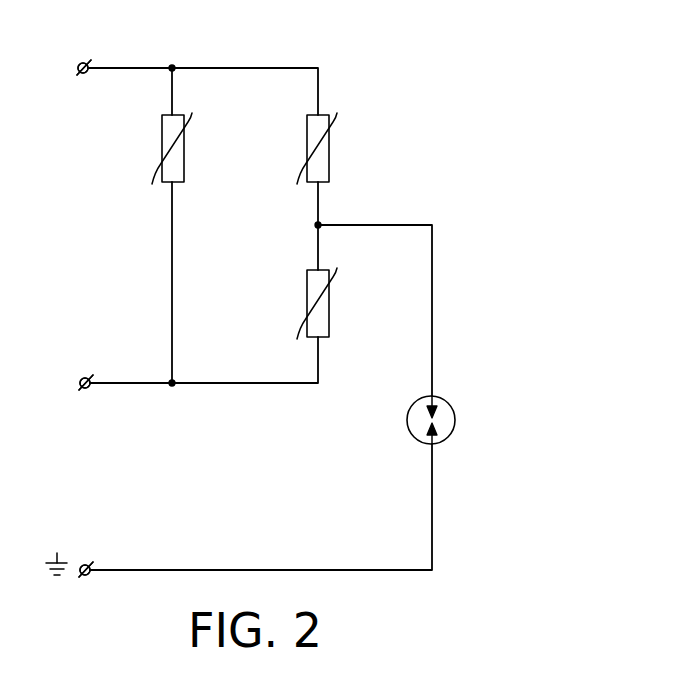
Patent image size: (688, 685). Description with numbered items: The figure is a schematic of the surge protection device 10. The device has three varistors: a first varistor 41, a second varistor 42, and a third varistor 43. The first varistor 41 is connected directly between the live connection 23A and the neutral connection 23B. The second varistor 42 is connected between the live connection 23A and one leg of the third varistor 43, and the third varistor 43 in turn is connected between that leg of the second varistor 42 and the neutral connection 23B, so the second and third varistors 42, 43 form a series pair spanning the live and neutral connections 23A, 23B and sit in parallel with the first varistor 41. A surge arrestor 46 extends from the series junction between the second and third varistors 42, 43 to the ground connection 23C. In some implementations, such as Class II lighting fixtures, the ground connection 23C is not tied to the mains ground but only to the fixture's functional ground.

The surge protection device 10 is at (513, 103).
The live connection 23A is at (89, 74).
The neutral connection 23B is at (84, 377).
The ground connection 23C is at (84, 564).
The first varistor 41 is at (184, 161).
The second varistor 42 is at (329, 161).
The third varistor 43 is at (329, 316).
The surge arrestor 46 is at (455, 420).